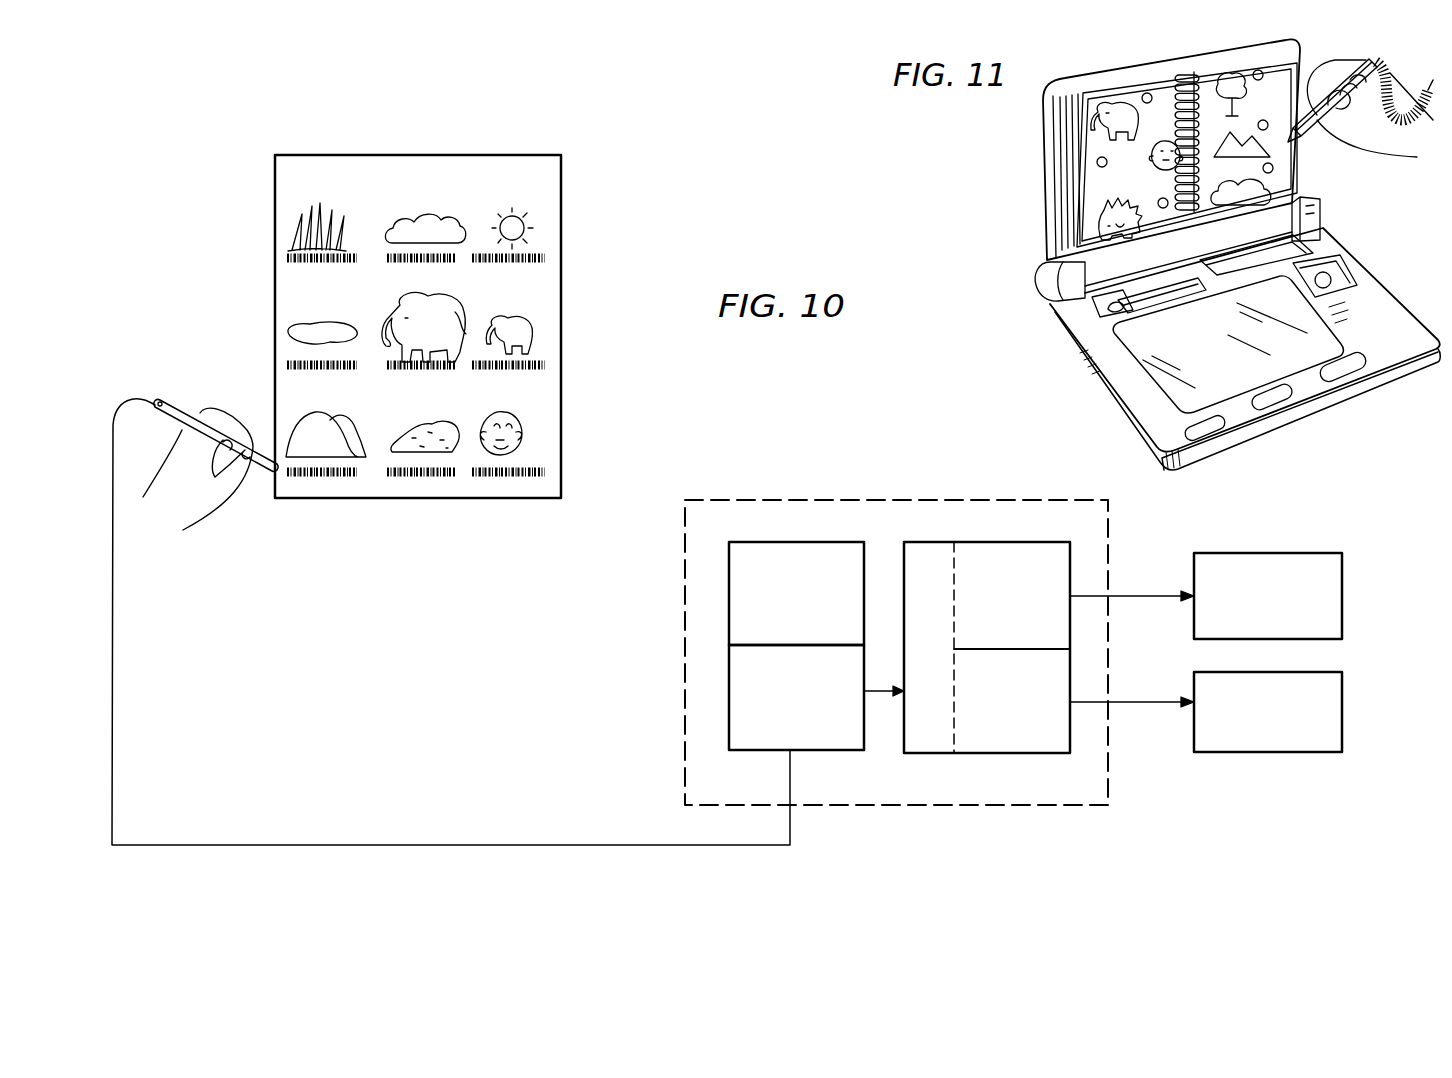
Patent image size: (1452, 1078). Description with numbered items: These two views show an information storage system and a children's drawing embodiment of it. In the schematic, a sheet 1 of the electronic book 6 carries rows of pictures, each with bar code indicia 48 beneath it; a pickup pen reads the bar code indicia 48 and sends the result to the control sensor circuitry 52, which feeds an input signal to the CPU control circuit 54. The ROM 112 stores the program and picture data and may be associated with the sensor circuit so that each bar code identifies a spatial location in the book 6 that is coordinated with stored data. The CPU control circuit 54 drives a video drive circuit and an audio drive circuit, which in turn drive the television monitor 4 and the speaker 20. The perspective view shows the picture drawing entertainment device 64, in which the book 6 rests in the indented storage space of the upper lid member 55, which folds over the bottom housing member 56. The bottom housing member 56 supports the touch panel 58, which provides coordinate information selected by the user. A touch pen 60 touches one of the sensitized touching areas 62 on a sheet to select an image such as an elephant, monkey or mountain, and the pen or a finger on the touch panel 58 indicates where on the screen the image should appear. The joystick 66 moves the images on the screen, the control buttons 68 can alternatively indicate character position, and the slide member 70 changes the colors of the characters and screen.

In FIG. 10, the sheet with pictures 1 is at (570, 192).
In FIG. 10, the bar code indicia 48 is at (512, 265).
In FIG. 10, the ROM 112 is at (826, 542).
In FIG. 10, the CPU control circuit 54 is at (932, 540).
In FIG. 10, the control sensor circuitry 52 is at (758, 752).
In FIG. 10, the television monitor 4 is at (1257, 553).
In FIG. 10, the speaker 20 is at (1244, 752).
In FIG. 11, the electronic book 6 is at (1120, 100).
In FIG. 11, the sensitized touching areas 62 is at (1147, 93).
In FIG. 11, the upper lid member 55 is at (1068, 120).
In FIG. 11, the touch pen 60 is at (1317, 123).
In FIG. 11, the picture drawing entertainment device 64 is at (1033, 263).
In FIG. 11, the joystick 66 is at (1328, 270).
In FIG. 11, the bottom housing member 56 is at (1400, 317).
In FIG. 11, the slide member 70 is at (1104, 308).
In FIG. 11, the touch panel 58 is at (1168, 358).
In FIG. 11, the control buttons 68 is at (1225, 423).